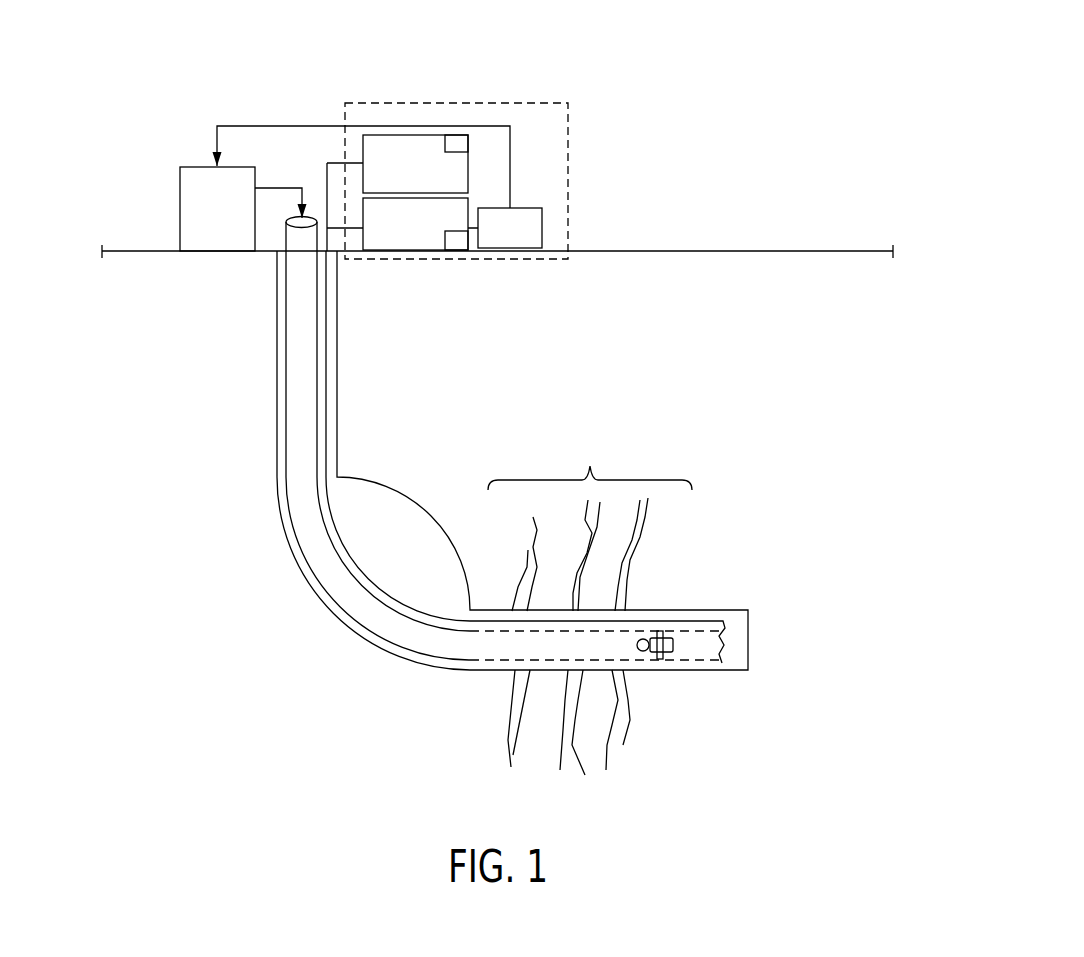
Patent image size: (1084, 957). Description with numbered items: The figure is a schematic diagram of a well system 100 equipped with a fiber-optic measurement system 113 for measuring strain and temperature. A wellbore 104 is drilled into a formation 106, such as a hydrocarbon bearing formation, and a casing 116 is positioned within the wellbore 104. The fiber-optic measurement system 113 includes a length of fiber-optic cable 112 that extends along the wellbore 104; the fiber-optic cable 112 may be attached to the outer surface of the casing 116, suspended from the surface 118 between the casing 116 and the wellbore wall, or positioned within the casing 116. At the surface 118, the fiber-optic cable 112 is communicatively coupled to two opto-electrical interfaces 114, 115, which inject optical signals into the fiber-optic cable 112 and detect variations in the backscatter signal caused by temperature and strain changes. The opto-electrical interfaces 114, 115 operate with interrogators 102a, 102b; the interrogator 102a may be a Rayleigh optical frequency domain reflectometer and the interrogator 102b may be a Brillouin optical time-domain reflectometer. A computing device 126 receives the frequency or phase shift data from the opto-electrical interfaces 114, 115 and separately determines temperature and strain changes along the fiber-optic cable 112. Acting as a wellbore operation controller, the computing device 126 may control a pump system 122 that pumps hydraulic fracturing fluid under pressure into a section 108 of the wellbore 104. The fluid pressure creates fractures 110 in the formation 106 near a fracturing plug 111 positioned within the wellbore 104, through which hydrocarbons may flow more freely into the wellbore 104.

The well system 100 is at (623, 155).
The interrogator 102a is at (457, 138).
The interrogator 102b is at (455, 239).
The wellbore 104 is at (278, 524).
The formation 106 is at (238, 298).
The section 108 is at (590, 459).
The fractures 110 is at (520, 577).
The fracturing plug 111 is at (666, 650).
The fiber-optic cable 112 is at (328, 478).
The fiber-optic measurement system 113 is at (573, 103).
The opto-electrical interface 114 is at (382, 150).
The opto-electrical interface 115 is at (384, 252).
The casing 116 is at (320, 587).
The surface 118 is at (728, 250).
The pump system 122 is at (181, 212).
The computing device 126 is at (522, 207).